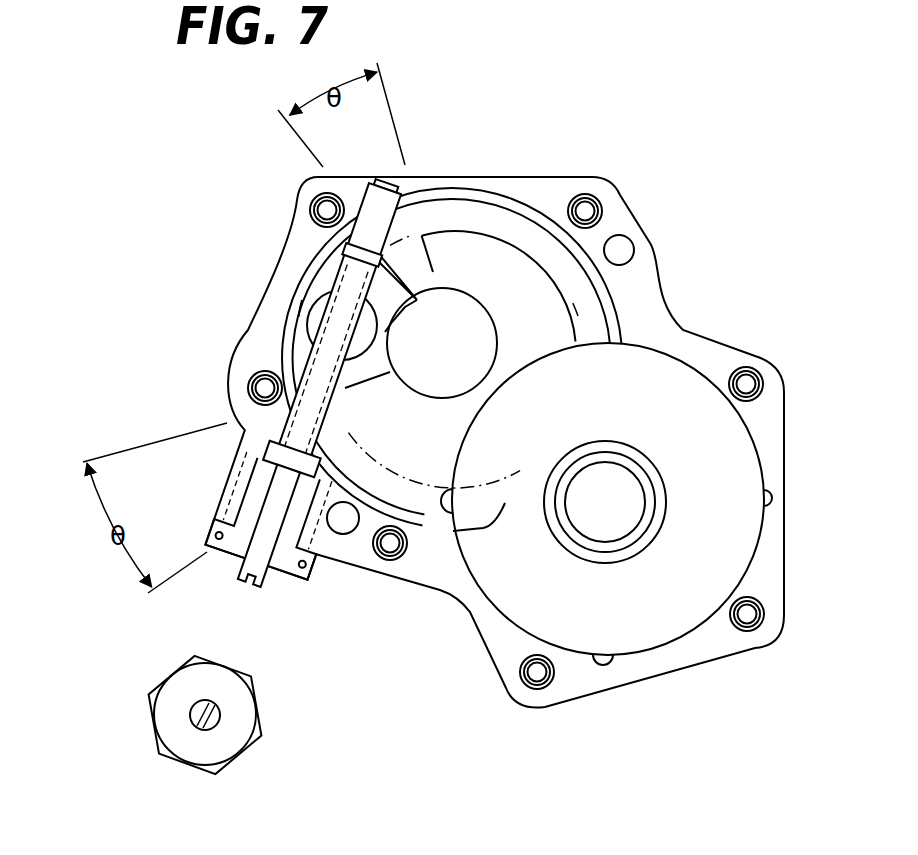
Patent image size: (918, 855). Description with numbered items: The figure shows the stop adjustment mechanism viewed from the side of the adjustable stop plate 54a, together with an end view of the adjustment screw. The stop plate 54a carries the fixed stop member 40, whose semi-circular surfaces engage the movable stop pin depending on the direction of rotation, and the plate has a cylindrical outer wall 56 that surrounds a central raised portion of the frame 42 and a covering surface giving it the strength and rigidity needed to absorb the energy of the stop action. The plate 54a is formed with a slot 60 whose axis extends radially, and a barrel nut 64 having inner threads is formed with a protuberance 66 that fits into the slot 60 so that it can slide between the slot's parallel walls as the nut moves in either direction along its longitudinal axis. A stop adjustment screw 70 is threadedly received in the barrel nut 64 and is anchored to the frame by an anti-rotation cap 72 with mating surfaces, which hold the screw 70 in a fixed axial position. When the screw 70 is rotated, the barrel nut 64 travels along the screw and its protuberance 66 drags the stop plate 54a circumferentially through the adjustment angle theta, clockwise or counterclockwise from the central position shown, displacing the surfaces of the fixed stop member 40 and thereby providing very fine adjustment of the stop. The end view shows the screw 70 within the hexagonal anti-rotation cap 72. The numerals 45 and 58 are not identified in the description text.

In FIG. 7, the fixed stop member 40 is at (397, 313).
In FIG. 7, the frame 42 is at (368, 552).
In FIG. 7, the gear teeth 45 is at (433, 272).
In FIG. 7, the adjustable stop plate 54a is at (431, 206).
In FIG. 7, the cylindrical outer wall 56 is at (488, 193).
In FIG. 7, the chamber 58 is at (498, 217).
In FIG. 7, the slot 60 is at (327, 283).
In FIG. 7, the barrel nut 64 is at (352, 342).
In FIG. 7, the protuberance 66 is at (313, 315).
In FIG. 7, the stop adjustment screw 70 is at (371, 186).
In FIG. 7A, the stop adjustment screw 70 is at (220, 718).
In FIG. 7, the anti-rotation cap 72 is at (227, 553).
In FIG. 7A, the anti-rotation cap 72 is at (240, 698).